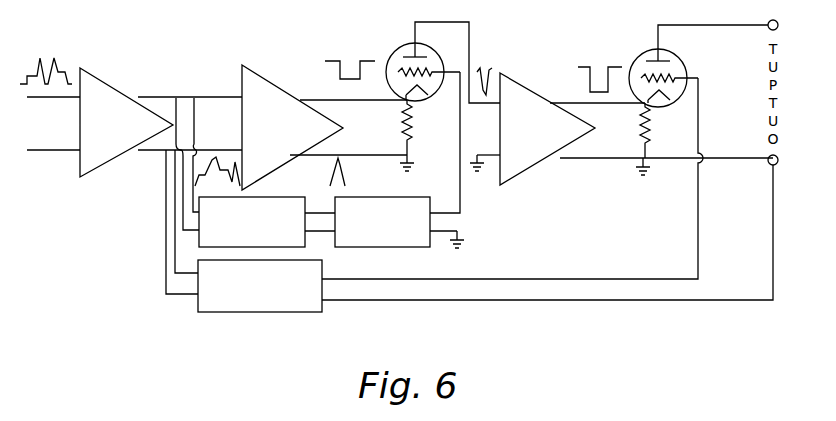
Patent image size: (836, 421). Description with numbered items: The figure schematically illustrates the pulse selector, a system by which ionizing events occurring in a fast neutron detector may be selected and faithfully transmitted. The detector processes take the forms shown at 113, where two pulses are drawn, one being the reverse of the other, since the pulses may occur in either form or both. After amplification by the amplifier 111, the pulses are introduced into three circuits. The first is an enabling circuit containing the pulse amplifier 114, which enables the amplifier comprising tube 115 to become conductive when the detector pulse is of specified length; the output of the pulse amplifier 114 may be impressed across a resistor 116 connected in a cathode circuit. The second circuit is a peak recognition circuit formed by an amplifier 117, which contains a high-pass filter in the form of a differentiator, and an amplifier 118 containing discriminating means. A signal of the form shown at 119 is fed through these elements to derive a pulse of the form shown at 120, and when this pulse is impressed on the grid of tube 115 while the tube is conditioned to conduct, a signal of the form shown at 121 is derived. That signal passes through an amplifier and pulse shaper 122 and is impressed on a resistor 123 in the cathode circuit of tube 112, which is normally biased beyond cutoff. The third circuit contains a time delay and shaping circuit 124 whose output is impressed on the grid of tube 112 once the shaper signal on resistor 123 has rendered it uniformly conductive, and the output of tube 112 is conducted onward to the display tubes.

The amplifier 111 is at (103, 72).
The tube 112 is at (680, 60).
The pulses 113 is at (40, 63).
The pulse amplifier 114 is at (268, 72).
The tube 115 is at (395, 57).
The resistor 116 is at (413, 130).
The amplifier 117 is at (275, 197).
The amplifier 118 is at (382, 248).
The pulses 119 is at (216, 158).
The pulse 120 is at (345, 158).
The signal 121 is at (480, 65).
The amplifier and pulse shaper 122 is at (512, 78).
The resistor 123 is at (651, 133).
The time delay and shaping circuit 124 is at (247, 313).